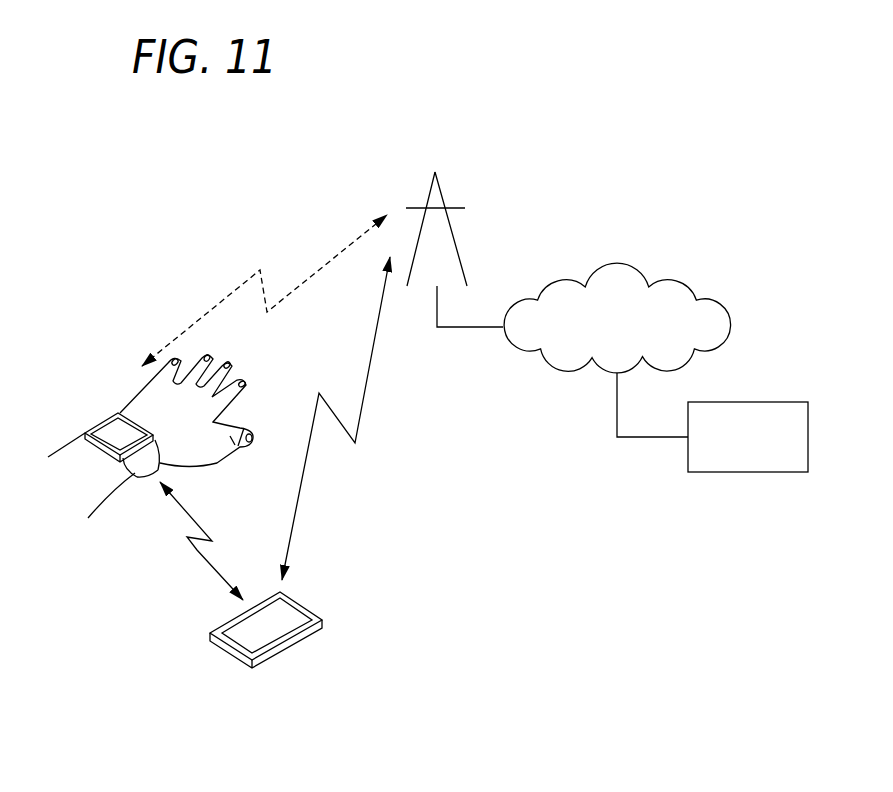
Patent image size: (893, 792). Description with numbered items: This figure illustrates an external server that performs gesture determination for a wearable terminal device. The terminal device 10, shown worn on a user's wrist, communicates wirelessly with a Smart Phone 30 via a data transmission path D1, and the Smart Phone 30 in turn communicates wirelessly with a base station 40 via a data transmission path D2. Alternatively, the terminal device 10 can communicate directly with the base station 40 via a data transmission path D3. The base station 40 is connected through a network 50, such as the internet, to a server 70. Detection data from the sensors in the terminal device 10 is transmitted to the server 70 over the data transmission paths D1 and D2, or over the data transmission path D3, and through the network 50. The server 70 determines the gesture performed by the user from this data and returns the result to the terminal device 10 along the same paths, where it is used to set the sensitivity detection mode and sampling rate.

The terminal device 10 is at (106, 425).
The Smart Phone 30 is at (295, 645).
The base station 40 is at (441, 190).
The network 50 is at (618, 263).
The server 70 is at (745, 402).
The data transmission path D1 is at (195, 554).
The data transmission path D2 is at (365, 408).
The data transmission path D3 is at (223, 297).